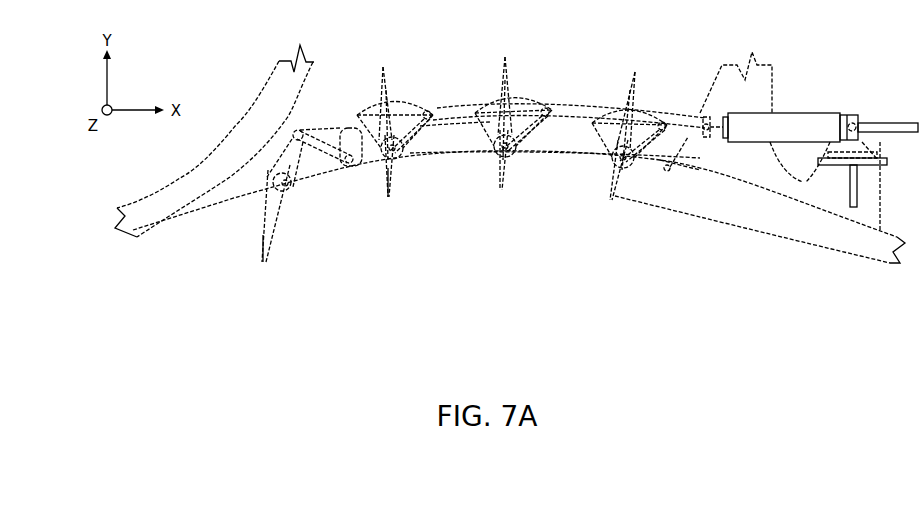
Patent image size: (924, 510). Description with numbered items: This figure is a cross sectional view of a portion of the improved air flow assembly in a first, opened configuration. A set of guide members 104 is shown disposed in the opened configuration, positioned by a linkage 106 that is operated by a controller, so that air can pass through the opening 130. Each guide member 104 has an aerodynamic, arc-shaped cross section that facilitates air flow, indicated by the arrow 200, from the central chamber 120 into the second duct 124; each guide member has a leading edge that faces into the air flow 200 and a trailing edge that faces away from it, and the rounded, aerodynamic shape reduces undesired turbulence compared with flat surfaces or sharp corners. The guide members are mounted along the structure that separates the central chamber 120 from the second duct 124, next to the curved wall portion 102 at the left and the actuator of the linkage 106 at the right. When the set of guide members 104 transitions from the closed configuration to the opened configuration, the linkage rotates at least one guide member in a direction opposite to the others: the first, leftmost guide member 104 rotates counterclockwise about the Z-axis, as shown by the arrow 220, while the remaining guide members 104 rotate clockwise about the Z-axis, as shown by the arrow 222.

The first beam section 102 is at (183, 178).
The guide member 104 is at (638, 195).
The linkage 106 is at (810, 30).
The central chamber 120 is at (565, 197).
The second duct 124 is at (528, 31).
The opening 130 is at (517, 123).
The air flow 200 is at (216, 260).
The arrow indicating counterclockwise rotation 220 is at (248, 236).
The arrow indicating clockwise rotation 222 is at (488, 74).